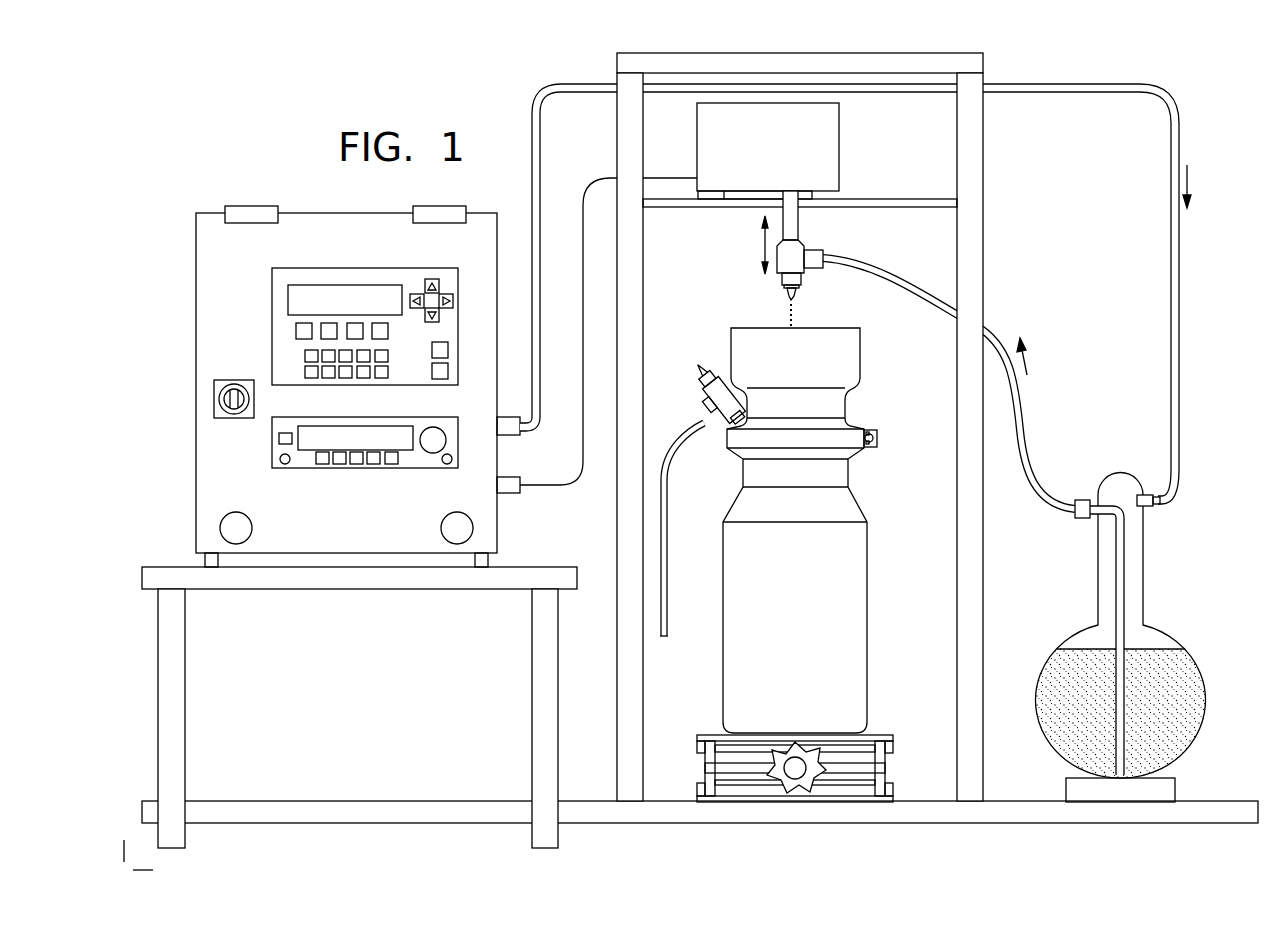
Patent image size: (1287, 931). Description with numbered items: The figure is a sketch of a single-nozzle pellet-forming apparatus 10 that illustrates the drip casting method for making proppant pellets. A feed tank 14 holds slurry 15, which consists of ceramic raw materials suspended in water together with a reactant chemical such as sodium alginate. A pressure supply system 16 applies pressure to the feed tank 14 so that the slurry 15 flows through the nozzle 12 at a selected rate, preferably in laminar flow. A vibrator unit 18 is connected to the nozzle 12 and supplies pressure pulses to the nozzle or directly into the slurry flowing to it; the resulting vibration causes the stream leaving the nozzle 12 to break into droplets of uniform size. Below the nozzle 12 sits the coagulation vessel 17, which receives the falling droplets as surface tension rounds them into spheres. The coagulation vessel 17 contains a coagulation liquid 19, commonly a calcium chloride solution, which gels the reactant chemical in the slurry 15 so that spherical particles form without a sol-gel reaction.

The pellet-forming apparatus 10 is at (285, 132).
The nozzle 12 is at (787, 299).
The feed tank 14 is at (1147, 638).
The slurry 15 is at (1146, 734).
The pressure supply system 16 is at (541, 193).
The coagulation vessel 17 is at (867, 640).
The vibrator unit 18 is at (745, 153).
The coagulation liquid 19 is at (783, 664).